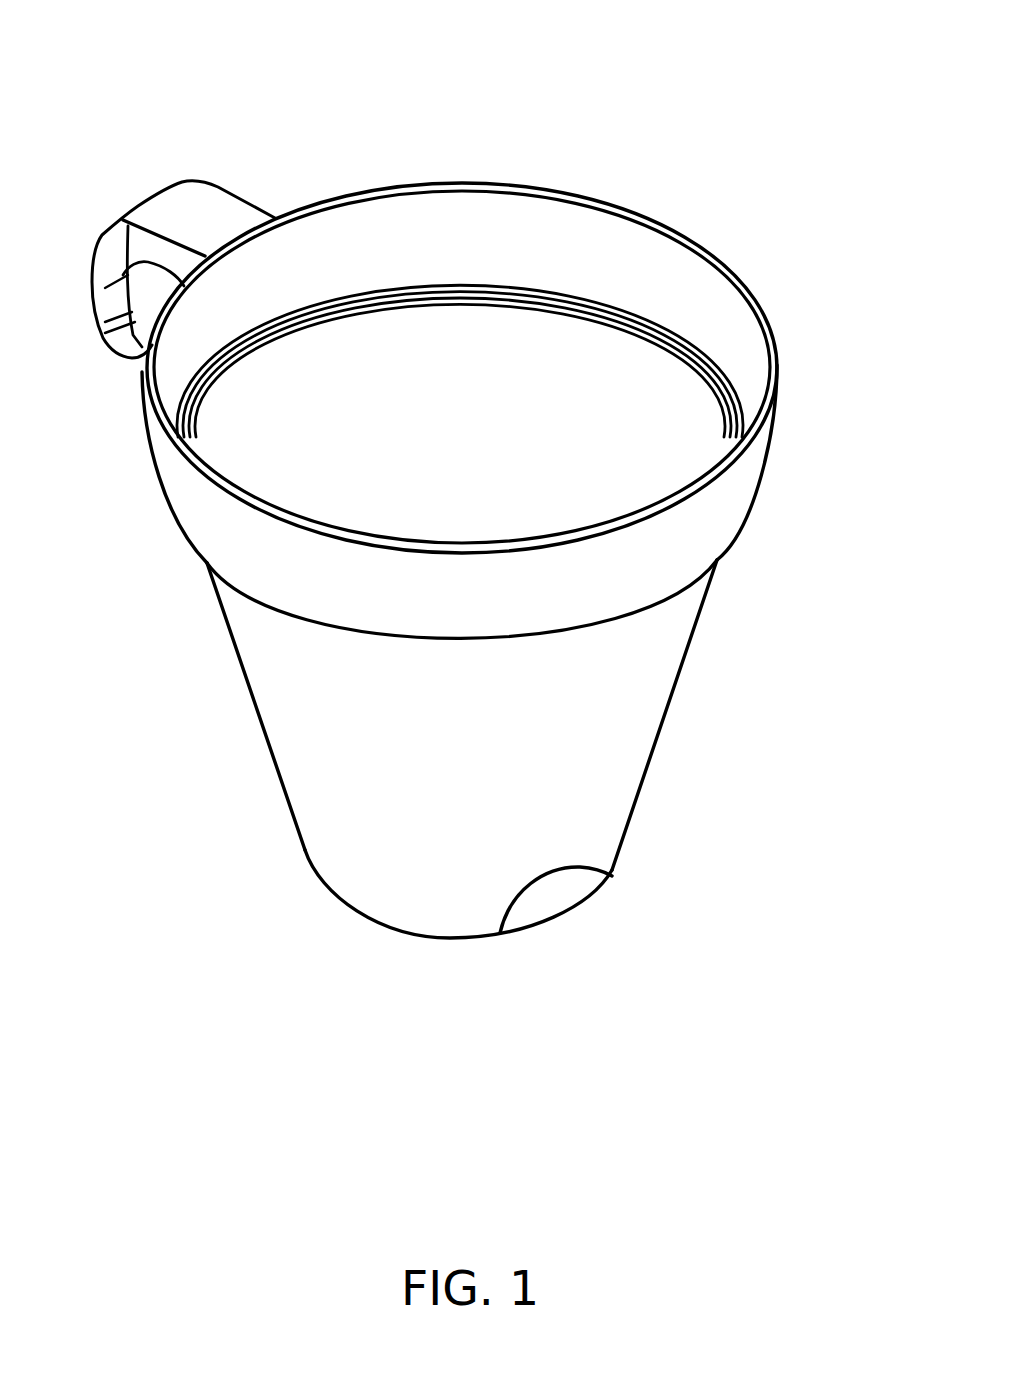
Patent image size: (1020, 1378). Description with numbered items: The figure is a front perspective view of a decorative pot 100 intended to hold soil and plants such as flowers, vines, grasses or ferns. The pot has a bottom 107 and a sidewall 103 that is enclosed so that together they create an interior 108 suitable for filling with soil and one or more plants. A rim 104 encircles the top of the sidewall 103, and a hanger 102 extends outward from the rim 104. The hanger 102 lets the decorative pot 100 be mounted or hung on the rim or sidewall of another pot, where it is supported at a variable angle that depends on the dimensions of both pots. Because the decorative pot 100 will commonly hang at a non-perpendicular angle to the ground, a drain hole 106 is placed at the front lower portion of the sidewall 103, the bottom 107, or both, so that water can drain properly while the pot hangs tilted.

The decorative pot 100 is at (815, 125).
The hanger 102 is at (167, 193).
The sidewall 103 is at (327, 743).
The rim 104 is at (483, 223).
The drain hole 106 is at (558, 902).
The bottom 107 is at (430, 937).
The interior 108 is at (478, 447).